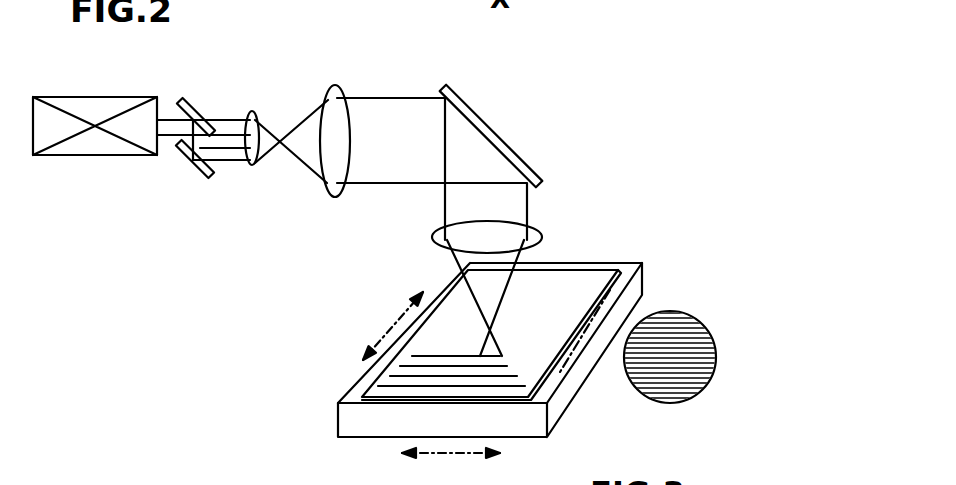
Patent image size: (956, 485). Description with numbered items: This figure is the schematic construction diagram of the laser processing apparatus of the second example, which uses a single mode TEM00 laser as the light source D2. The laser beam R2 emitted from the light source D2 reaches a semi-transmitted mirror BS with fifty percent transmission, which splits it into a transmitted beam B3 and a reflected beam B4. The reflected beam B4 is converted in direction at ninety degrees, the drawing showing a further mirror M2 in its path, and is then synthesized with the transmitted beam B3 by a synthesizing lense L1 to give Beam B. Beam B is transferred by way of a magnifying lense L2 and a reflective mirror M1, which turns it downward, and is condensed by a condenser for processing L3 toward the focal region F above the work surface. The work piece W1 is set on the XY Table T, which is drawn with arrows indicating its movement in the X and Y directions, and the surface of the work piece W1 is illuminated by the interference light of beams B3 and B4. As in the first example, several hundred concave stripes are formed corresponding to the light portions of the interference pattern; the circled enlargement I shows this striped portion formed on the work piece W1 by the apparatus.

The laser light source D2 is at (95, 101).
The laser beam R2 is at (176, 128).
The semi-transmitted mirror BS is at (191, 108).
The mirror M2 is at (192, 168).
The transmitted beam B3 is at (224, 128).
The reflected beam B4 is at (238, 146).
The synthesizing lense L1 is at (254, 116).
The magnifying lense L2 is at (336, 90).
The Beam B is at (507, 213).
The reflective mirror M1 is at (504, 138).
The condenser for processing L3 is at (533, 233).
The focal point F is at (492, 331).
The XY Table T is at (338, 421).
The work piece W1 is at (610, 290).
The irradiated spot pattern I is at (692, 350).
The Y direction Y is at (400, 313).
The X direction X is at (433, 454).